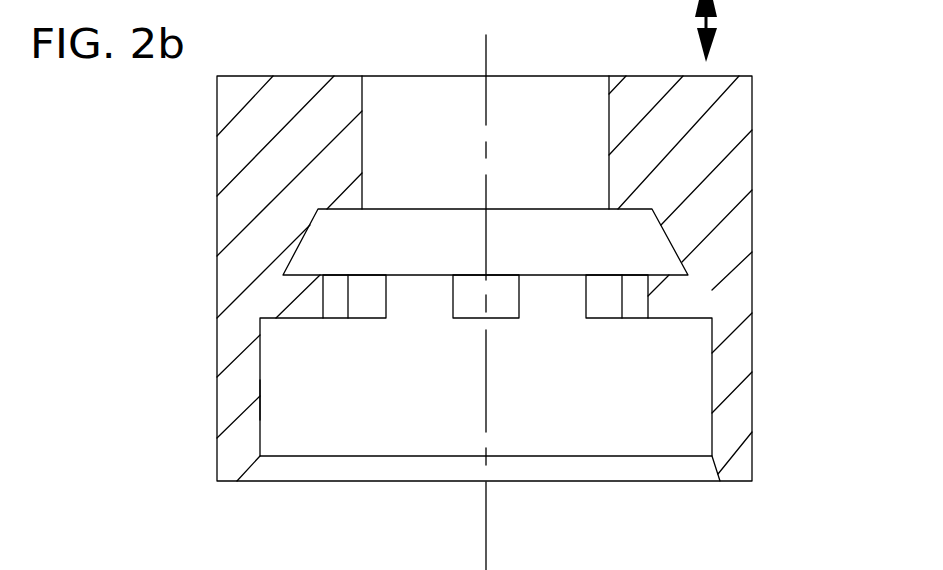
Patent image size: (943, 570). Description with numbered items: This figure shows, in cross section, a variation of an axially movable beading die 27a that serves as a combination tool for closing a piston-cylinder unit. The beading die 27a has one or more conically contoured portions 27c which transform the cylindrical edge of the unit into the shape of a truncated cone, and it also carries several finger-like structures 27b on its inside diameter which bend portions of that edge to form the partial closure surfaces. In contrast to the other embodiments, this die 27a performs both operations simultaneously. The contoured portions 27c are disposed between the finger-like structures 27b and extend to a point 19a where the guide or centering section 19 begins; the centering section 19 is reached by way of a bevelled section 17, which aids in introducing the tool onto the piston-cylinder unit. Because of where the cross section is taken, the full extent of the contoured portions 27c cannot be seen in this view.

The beading die 27a is at (213, 333).
The finger-like structures 27b is at (677, 318).
The conically contoured portions 27c is at (668, 238).
The point where centering section begins 19a is at (712, 318).
The centering section 19 is at (262, 398).
The bevelled section 17 is at (262, 468).